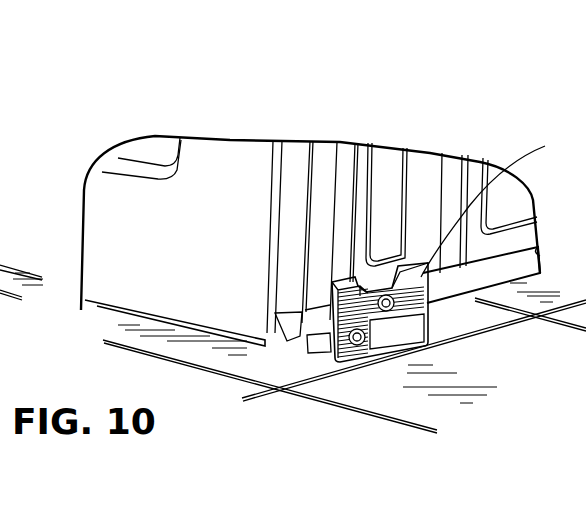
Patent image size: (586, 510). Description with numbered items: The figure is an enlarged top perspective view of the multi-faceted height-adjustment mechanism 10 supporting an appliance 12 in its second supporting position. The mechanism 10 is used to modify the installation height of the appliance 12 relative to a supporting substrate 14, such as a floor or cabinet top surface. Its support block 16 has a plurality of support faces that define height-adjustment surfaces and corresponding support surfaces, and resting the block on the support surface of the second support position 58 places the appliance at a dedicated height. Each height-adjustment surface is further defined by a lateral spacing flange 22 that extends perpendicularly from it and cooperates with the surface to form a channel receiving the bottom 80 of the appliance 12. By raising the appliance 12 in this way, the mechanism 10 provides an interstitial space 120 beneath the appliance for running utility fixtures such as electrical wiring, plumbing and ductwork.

The height-adjustment mechanism 10 is at (266, 55).
The appliance 12 is at (197, 127).
The lateral spacing flange 22 is at (491, 200).
The interstitial space 120 is at (115, 312).
The supporting substrate 14 is at (390, 402).
The support block 16 is at (333, 368).
The second support position 58 is at (443, 355).
The bottom of the appliance 80 is at (510, 280).